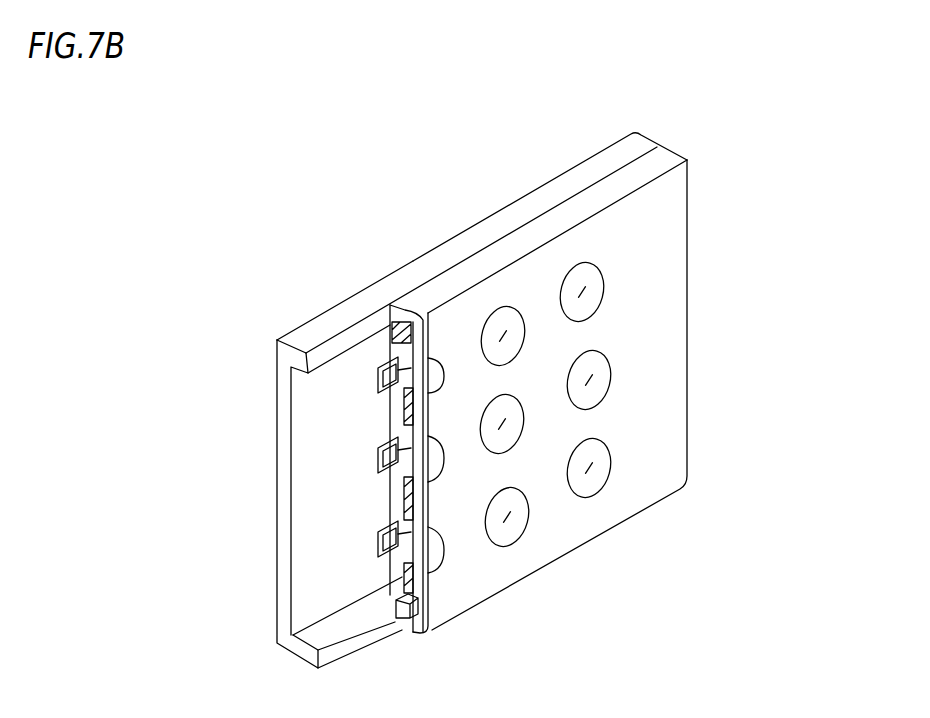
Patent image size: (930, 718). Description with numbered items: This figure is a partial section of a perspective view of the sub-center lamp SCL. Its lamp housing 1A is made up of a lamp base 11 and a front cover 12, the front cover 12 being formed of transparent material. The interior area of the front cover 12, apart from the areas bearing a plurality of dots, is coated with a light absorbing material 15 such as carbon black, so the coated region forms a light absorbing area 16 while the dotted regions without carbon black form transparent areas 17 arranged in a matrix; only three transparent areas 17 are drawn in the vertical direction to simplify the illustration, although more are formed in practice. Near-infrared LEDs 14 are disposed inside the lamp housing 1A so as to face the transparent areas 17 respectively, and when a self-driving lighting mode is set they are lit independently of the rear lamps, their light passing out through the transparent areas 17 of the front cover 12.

The lamp housing 1A is at (584, 362).
The lamp base 11 is at (332, 307).
The front cover 12 is at (467, 260).
The near-infrared LEDs 14 is at (378, 542).
The light absorbing material 15 is at (397, 615).
The light absorbing area 16 is at (670, 355).
The transparent areas 17 is at (516, 519).
The sub-center lamp SCL is at (690, 222).